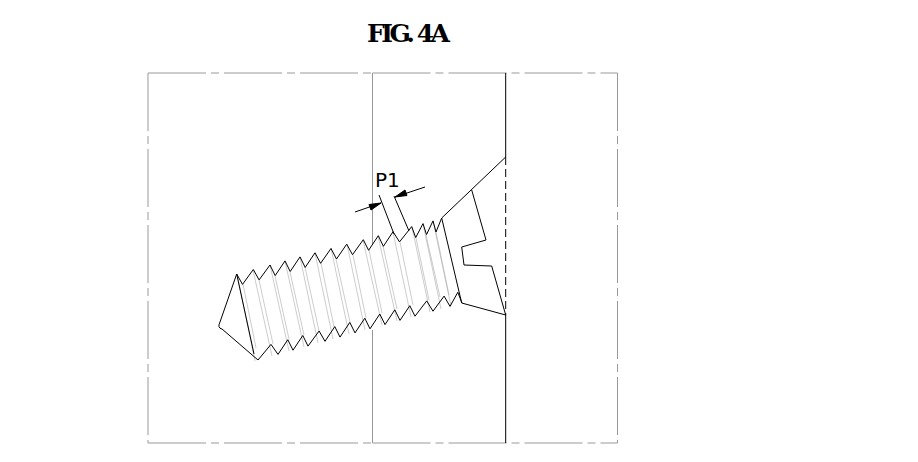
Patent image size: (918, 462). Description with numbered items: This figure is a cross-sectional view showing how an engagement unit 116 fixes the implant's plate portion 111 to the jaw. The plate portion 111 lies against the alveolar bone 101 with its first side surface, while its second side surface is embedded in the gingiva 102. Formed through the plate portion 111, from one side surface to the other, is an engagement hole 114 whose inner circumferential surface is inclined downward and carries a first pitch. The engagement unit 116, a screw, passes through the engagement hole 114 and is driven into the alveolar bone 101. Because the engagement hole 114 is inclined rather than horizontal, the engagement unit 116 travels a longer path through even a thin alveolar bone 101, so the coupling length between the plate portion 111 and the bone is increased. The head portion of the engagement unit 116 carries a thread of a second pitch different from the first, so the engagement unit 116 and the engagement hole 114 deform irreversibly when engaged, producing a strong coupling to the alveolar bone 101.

The alveolar bone 101 is at (188, 397).
The gingiva 102 is at (565, 145).
The plate portion 111 is at (475, 390).
The engagement hole 114 is at (506, 238).
The engagement unit 116 is at (265, 293).